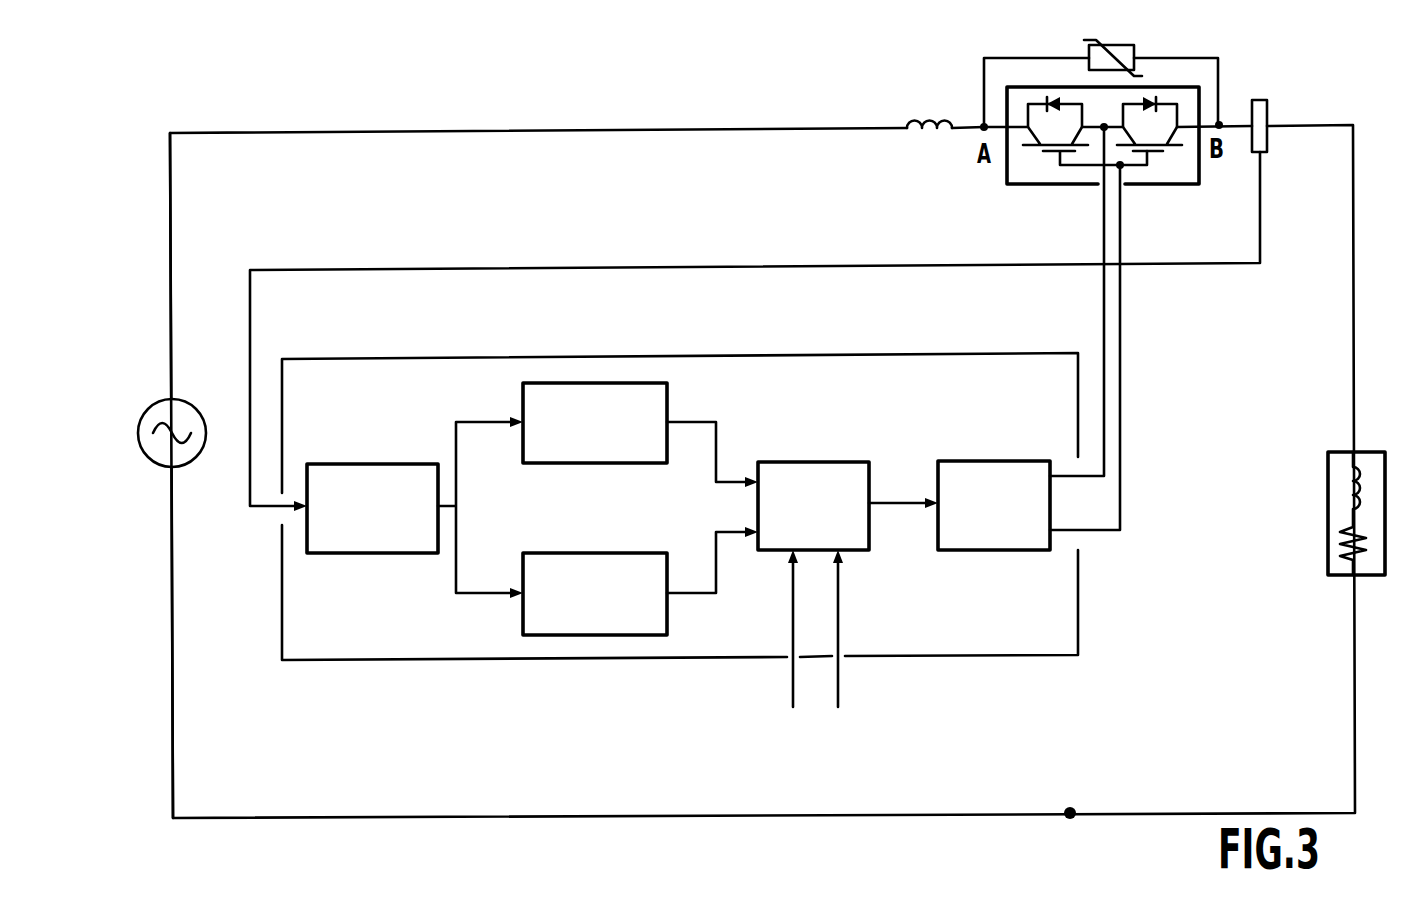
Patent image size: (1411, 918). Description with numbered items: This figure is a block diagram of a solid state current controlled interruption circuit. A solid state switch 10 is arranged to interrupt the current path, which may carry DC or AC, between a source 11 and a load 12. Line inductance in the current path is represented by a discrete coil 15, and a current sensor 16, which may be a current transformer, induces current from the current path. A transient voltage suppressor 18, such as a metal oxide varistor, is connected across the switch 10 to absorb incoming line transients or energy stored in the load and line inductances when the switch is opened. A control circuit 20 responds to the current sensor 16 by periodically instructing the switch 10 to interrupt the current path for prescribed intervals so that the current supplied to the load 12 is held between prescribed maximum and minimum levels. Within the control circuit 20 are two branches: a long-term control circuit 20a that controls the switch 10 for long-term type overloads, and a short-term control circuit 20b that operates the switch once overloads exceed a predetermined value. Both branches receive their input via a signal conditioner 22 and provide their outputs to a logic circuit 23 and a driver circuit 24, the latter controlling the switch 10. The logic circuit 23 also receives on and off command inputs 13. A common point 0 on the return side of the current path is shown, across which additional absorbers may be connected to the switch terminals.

The solid state switch 10 is at (1032, 184).
The source 11 is at (137, 433).
The load 12 is at (1337, 575).
The on/off control input 13 is at (798, 740).
The discrete coil 15 is at (930, 115).
The current sensor 16 is at (1266, 100).
The transient voltage suppressor 18 is at (1122, 44).
The control circuit 20 is at (560, 660).
The long-term control circuit 20a is at (592, 463).
The short-term control circuit 20b is at (597, 553).
The signal conditioner 22 is at (375, 462).
The logic circuit 23 is at (810, 462).
The driver circuit 24 is at (980, 461).
The point O 0 is at (1071, 794).